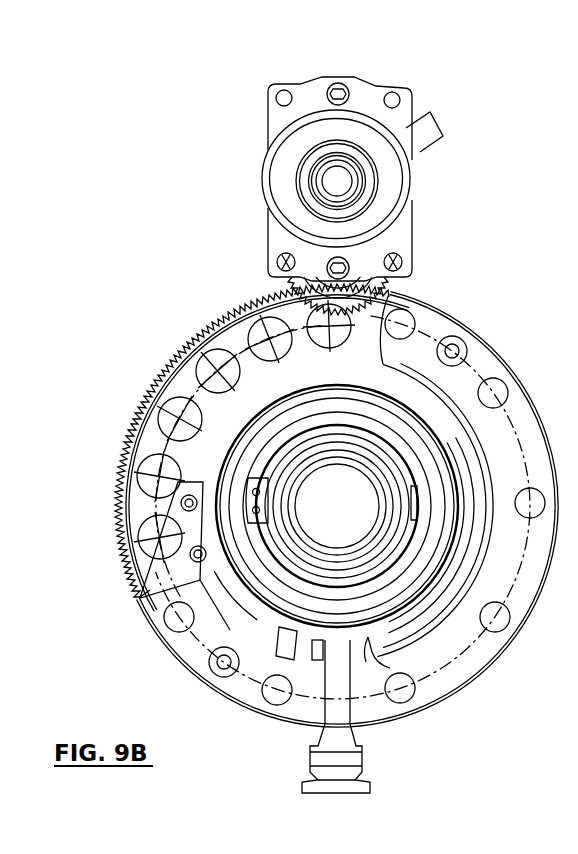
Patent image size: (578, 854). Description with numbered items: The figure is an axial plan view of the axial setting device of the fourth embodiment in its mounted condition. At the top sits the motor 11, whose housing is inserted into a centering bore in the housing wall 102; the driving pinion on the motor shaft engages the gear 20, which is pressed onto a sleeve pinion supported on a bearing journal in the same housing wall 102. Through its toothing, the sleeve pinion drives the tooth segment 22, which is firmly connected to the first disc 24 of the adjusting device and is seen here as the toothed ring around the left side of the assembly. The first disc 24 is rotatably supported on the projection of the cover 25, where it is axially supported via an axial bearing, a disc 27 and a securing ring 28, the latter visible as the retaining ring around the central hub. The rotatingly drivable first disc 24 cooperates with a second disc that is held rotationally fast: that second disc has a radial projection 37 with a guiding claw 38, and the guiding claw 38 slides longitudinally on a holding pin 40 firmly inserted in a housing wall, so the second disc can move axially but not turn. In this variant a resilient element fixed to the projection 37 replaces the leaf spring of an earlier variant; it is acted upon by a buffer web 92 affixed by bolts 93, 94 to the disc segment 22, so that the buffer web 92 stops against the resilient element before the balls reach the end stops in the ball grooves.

The motor 11 is at (371, 108).
The housing wall 102 is at (402, 97).
The gear 20 is at (383, 285).
The tooth segment 22 is at (223, 323).
The first disc 24 is at (407, 398).
The cover 25 is at (483, 353).
The disc 27 is at (427, 460).
The securing ring 28 is at (427, 517).
The radial projection 37 is at (373, 662).
The guiding claw 38 is at (346, 662).
The holding pin 40 is at (343, 700).
The buffer web 92 is at (228, 603).
The bolt 93 is at (147, 597).
The bolt 94 is at (122, 545).